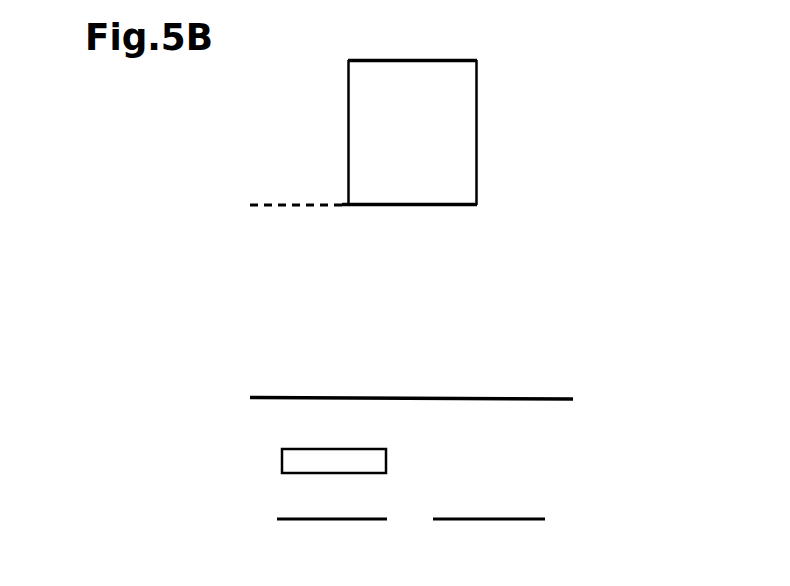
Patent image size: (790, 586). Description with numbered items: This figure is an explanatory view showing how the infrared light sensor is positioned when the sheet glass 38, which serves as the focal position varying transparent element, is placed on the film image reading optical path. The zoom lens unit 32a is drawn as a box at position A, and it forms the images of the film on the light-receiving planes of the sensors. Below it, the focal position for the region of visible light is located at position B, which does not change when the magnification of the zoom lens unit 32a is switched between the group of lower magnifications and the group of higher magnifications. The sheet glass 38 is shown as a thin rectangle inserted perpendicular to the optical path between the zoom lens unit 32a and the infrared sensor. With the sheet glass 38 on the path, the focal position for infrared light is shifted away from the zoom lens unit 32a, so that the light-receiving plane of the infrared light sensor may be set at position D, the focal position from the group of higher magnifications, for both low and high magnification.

The zoom lens unit 32a is at (463, 129).
The sheet glass 38 is at (281, 460).
The position of zoom lens unit A is at (281, 207).
The focal position for visible light B is at (395, 404).
The focal position for higher magnifications D is at (413, 540).